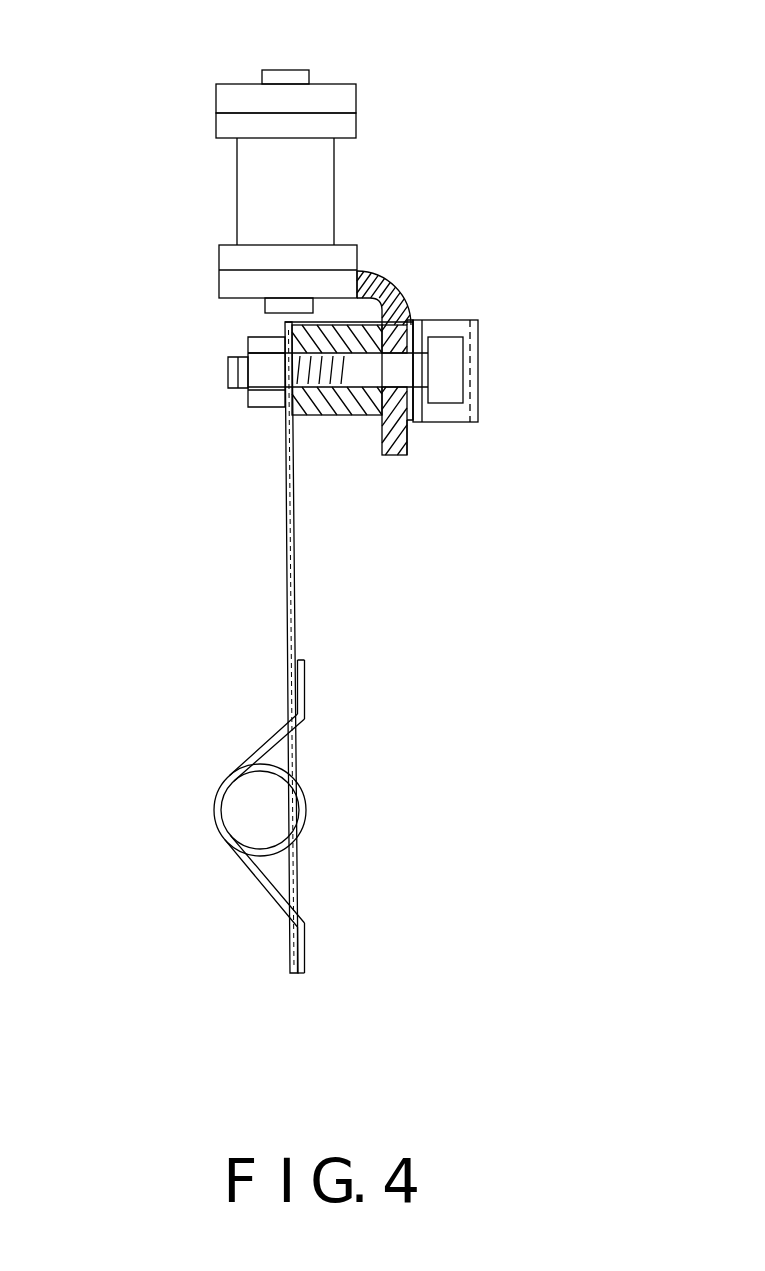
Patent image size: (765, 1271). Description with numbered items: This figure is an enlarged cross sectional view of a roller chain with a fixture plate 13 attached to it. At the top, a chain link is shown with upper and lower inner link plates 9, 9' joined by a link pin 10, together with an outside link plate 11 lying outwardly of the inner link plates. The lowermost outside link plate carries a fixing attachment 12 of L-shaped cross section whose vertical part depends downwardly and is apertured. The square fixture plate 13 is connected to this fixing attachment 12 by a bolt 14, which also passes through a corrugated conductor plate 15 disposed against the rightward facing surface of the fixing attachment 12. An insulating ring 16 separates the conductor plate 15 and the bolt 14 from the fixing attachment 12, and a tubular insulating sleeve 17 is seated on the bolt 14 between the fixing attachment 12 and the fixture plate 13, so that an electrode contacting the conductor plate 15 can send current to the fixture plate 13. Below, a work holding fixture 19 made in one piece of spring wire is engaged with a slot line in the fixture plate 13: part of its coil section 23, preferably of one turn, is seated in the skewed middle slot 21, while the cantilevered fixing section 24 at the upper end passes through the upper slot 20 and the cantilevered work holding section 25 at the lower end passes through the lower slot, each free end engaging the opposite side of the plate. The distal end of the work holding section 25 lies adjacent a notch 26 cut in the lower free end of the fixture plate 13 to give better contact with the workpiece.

The upper inner link plate 9 is at (313, 172).
The lower inner link plate 9' is at (316, 237).
The link pin 10 is at (296, 70).
The outside link plate 11 is at (337, 86).
The fixing attachment 12 is at (408, 447).
The fixture plate 13 is at (285, 582).
The bolt 14 is at (458, 383).
The corrugated conductor plate 15 is at (457, 320).
The insulating ring 16 is at (413, 320).
The tubular insulating sleeve 17 is at (347, 417).
The work holding fixture 19 is at (277, 831).
The upper slot 20 is at (285, 715).
The middle slot 21 is at (298, 777).
The coil section 23 is at (310, 815).
The fixing section 24 is at (303, 678).
The work holding section 25 is at (307, 948).
The notch 26 is at (287, 974).